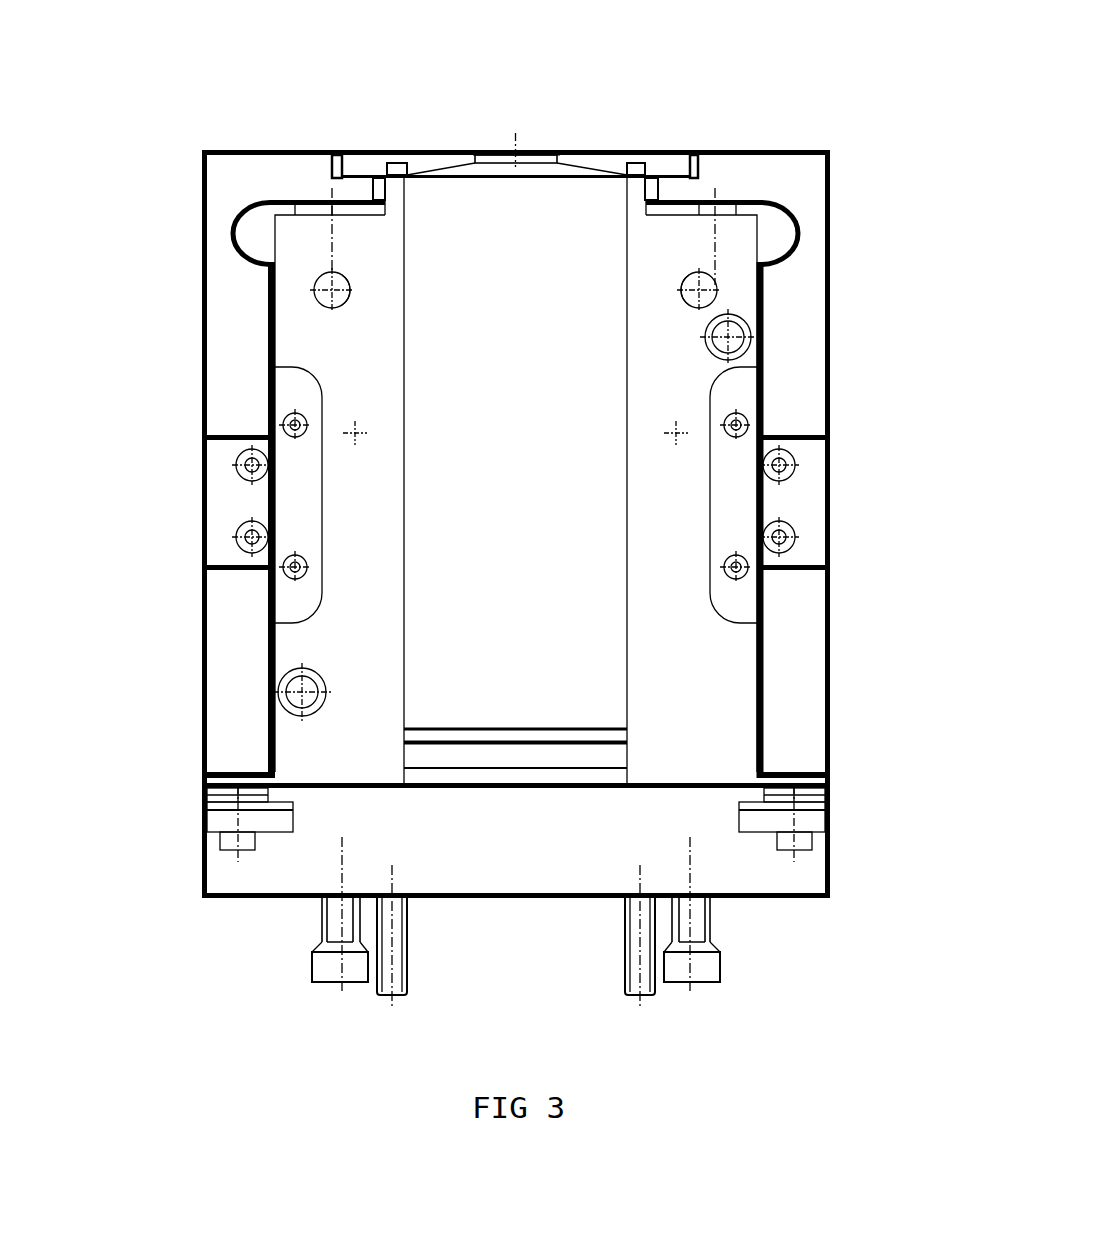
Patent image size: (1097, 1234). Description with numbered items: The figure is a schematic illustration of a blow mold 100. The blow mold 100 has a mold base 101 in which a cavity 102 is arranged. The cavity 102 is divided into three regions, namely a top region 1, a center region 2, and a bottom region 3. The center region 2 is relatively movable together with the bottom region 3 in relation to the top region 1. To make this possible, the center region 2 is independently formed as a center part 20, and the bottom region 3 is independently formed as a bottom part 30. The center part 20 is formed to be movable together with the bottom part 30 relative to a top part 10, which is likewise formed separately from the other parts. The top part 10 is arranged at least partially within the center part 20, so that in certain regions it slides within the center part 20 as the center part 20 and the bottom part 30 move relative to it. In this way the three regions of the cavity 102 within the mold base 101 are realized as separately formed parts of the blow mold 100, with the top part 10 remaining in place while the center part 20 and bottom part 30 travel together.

The blow mold 100 is at (906, 94).
The top region 1 is at (878, 137).
The center region 2 is at (878, 187).
The bottom region 3 is at (878, 730).
The top part 10 is at (362, 157).
The mold base 101 is at (235, 208).
The cavity 102 is at (480, 323).
The center part 20 is at (307, 340).
The bottom part 30 is at (433, 735).